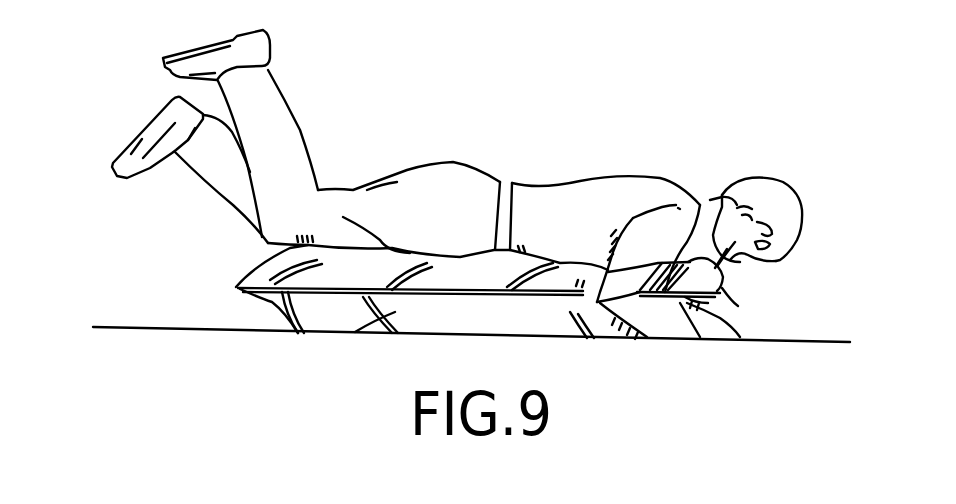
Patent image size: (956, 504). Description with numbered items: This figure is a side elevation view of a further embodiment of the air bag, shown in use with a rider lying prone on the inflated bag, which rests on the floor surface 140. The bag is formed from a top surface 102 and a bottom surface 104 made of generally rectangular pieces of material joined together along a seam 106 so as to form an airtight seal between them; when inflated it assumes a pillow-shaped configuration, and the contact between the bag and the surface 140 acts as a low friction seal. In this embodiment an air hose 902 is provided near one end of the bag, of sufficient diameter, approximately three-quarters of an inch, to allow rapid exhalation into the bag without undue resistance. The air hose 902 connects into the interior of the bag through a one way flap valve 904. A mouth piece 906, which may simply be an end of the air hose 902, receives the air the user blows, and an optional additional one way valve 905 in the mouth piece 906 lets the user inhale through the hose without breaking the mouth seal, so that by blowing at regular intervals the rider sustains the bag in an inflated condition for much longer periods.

The top surface 102 is at (268, 258).
The bottom surface 104 is at (266, 301).
The seam 106 is at (238, 288).
The surface 140 is at (110, 327).
The air hose 902 is at (733, 294).
The one way flap valve 904 is at (745, 315).
The one way valve 905 is at (697, 207).
The mouth piece 906 is at (718, 253).